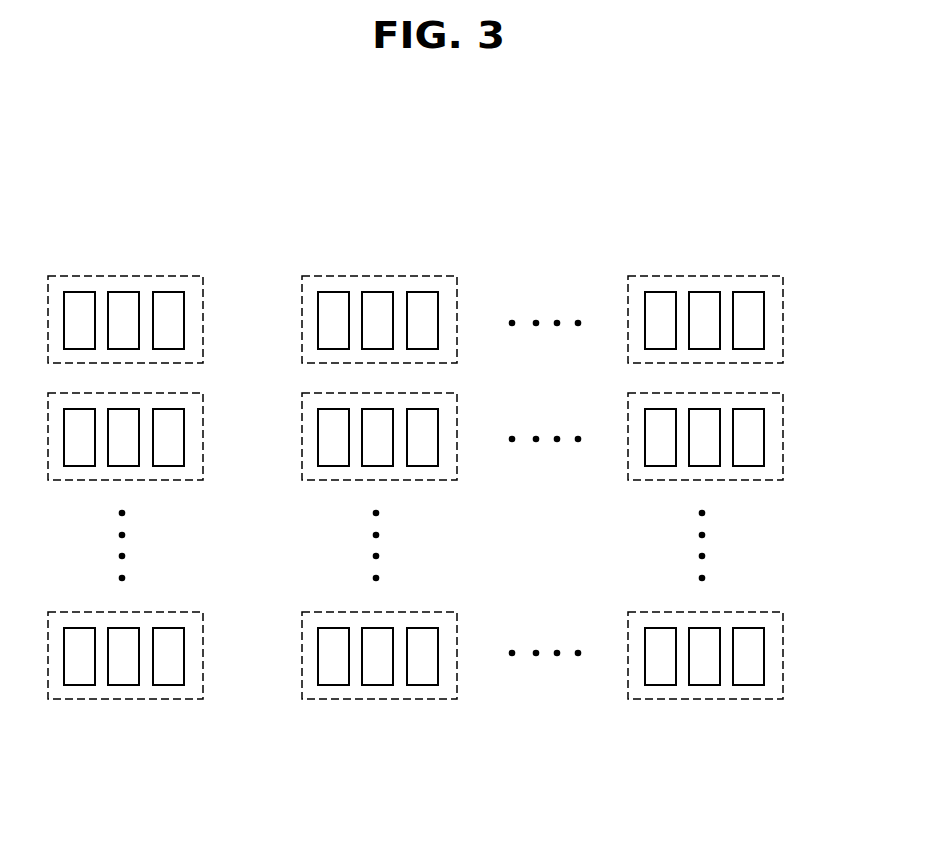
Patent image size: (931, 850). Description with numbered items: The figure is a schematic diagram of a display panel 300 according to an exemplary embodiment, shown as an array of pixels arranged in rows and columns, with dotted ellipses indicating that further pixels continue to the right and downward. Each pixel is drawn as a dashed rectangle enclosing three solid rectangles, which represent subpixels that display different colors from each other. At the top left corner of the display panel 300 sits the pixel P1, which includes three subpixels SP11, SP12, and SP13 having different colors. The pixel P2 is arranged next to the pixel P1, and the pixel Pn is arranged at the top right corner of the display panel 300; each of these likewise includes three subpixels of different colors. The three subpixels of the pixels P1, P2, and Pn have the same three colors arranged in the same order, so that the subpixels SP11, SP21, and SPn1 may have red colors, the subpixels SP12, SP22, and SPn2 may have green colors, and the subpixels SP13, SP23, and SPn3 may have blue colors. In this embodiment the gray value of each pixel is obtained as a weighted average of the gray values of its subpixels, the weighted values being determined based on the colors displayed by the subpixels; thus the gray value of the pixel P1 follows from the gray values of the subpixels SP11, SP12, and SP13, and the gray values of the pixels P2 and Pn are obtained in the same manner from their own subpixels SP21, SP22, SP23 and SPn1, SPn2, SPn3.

The display panel 300 is at (597, 220).
The pixel P1 is at (203, 291).
The pixel P2 is at (457, 291).
The pixel Pn is at (784, 291).
The subpixel SP11 is at (72, 292).
The subpixel SP12 is at (125, 292).
The subpixel SP13 is at (180, 292).
The subpixel SP21 is at (325, 292).
The subpixel SP22 is at (379, 292).
The subpixel SP23 is at (434, 292).
The subpixel SPn1 is at (654, 292).
The subpixel SPn2 is at (707, 292).
The subpixel SPn3 is at (761, 292).